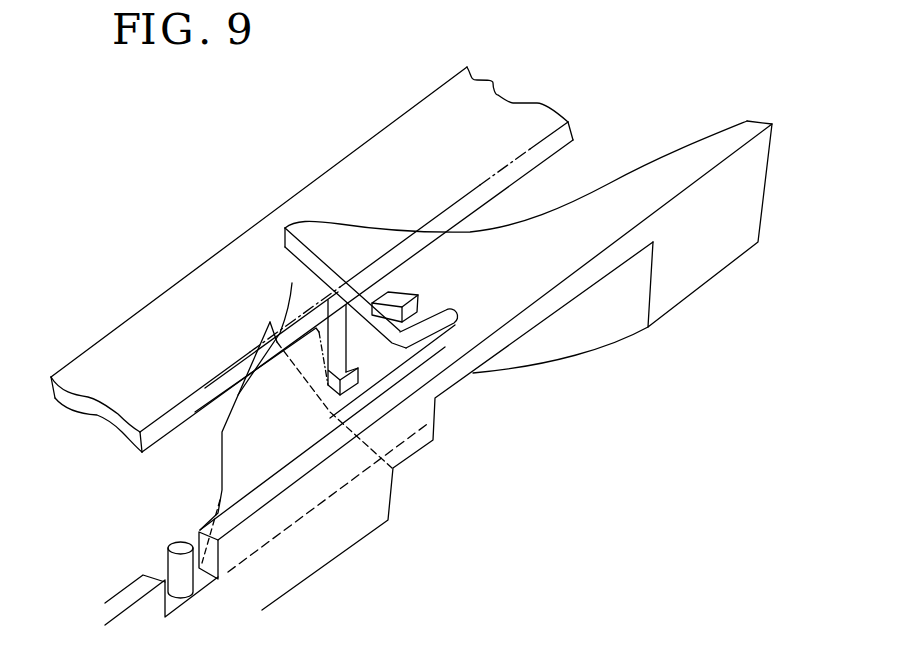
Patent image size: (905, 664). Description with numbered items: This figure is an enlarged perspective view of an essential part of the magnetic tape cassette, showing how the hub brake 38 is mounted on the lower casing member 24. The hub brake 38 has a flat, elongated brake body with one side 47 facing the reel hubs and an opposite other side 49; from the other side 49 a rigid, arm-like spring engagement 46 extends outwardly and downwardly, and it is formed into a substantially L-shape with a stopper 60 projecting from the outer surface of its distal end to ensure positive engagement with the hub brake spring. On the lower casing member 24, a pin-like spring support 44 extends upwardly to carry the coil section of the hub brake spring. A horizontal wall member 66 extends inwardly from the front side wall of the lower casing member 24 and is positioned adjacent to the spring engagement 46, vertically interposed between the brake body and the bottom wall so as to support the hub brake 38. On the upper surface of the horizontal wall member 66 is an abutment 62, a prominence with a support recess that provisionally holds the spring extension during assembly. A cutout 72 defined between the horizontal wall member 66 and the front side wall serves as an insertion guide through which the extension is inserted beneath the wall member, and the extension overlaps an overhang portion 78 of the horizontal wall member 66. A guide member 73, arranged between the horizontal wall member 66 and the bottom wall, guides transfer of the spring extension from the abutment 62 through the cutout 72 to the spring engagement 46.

The lower casing member 24 is at (680, 305).
The hub brake 38 is at (538, 117).
The spring support 44 is at (182, 543).
The spring engagement 46 is at (313, 358).
The one side of the hub brake body 47 is at (172, 285).
The other side of the hub brake body 49 is at (375, 262).
The stopper 60 is at (326, 402).
The abutment 62 is at (400, 296).
The horizontal wall member 66 is at (513, 242).
The cutout 72 is at (449, 323).
The guide member 73 is at (372, 372).
The overhang portion 78 is at (352, 324).